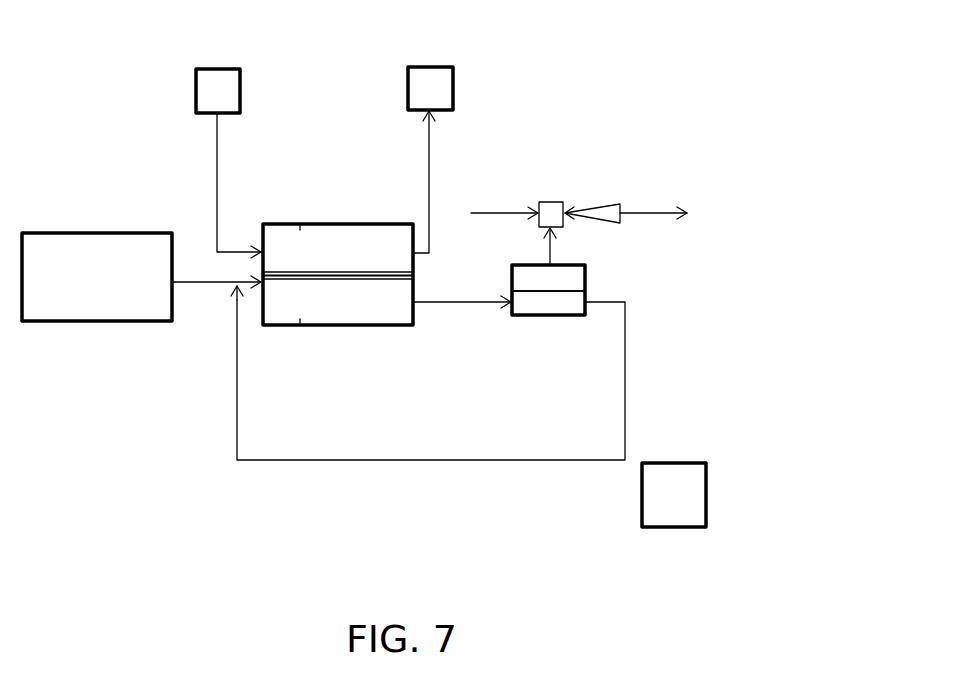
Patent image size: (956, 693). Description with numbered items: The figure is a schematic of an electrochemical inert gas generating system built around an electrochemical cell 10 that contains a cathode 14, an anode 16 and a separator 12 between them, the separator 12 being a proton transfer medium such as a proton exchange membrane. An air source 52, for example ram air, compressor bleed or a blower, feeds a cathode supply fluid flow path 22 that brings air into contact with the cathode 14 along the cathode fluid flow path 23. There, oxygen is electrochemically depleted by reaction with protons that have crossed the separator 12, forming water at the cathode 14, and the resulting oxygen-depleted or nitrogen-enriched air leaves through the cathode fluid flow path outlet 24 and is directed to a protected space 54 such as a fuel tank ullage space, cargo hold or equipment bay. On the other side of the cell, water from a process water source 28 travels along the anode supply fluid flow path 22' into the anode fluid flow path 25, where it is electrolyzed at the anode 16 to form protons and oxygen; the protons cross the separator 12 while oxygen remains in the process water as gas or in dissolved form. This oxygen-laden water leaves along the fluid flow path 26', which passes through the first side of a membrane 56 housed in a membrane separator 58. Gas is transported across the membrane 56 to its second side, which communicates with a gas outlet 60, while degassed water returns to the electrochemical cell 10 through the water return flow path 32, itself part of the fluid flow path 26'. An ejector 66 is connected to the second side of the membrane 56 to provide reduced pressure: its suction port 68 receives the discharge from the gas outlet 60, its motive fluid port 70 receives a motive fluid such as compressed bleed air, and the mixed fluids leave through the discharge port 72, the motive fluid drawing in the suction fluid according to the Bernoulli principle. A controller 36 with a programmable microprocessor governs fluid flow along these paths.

The electrochemical cell 10 is at (296, 222).
The separator 12 is at (337, 268).
The cathode 14 is at (385, 265).
The anode 16 is at (370, 280).
The cathode supply fluid flow path 22 is at (178, 185).
The anode supply fluid flow path 22' is at (203, 350).
The cathode fluid flow path 23 is at (328, 255).
The cathode fluid flow path outlet 24 is at (428, 150).
The anode fluid flow path 25 is at (293, 295).
The fluid flow path 26' is at (462, 358).
The process water source 28 is at (105, 321).
The water return flow path 32 is at (328, 460).
The controller 36 is at (706, 497).
The air source 52 is at (196, 82).
The protected space 54 is at (453, 81).
The membrane 56 is at (537, 293).
The membrane separator 58 is at (570, 313).
The gas outlet 60 is at (552, 252).
The ejector 66 is at (550, 202).
The suction port 68 is at (540, 228).
The motive fluid port 70 is at (497, 213).
The discharge port 72 is at (650, 213).